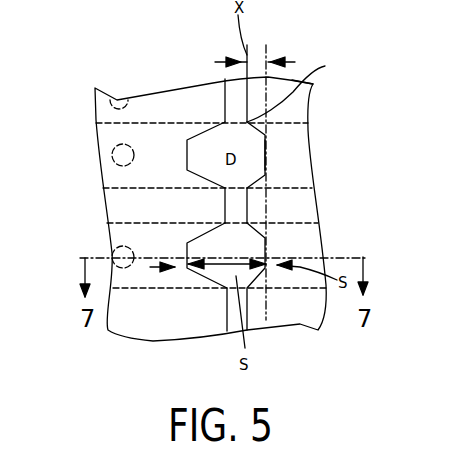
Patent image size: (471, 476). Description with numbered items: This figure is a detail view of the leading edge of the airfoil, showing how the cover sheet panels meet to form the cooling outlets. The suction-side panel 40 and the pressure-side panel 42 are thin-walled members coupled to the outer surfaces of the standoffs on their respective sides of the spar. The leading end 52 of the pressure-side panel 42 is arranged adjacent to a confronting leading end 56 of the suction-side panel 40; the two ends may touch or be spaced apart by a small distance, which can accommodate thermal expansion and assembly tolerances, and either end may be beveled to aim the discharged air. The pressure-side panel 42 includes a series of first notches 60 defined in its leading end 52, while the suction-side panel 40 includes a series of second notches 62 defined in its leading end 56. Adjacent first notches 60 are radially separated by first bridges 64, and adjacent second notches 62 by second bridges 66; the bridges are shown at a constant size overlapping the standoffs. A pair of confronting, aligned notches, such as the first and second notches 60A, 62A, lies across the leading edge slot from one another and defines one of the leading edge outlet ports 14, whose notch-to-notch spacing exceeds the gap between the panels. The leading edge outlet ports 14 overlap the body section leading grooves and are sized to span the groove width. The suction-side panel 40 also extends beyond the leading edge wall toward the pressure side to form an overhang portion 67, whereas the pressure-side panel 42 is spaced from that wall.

The leading edge outlet ports 14 is at (247, 175).
The suction-side panel 40 is at (295, 78).
The pressure-side panel 42 is at (180, 100).
The leading end of the pressure-side panel 52 is at (221, 109).
The leading end of the suction-side panel 56 is at (296, 84).
The first notches 60 is at (217, 151).
The first notch 60A is at (207, 277).
The second notches 62 is at (247, 153).
The second notch 62A is at (263, 276).
The first bridges 64 is at (226, 195).
The second bridges 66 is at (247, 207).
The overhang portion 67 is at (298, 90).